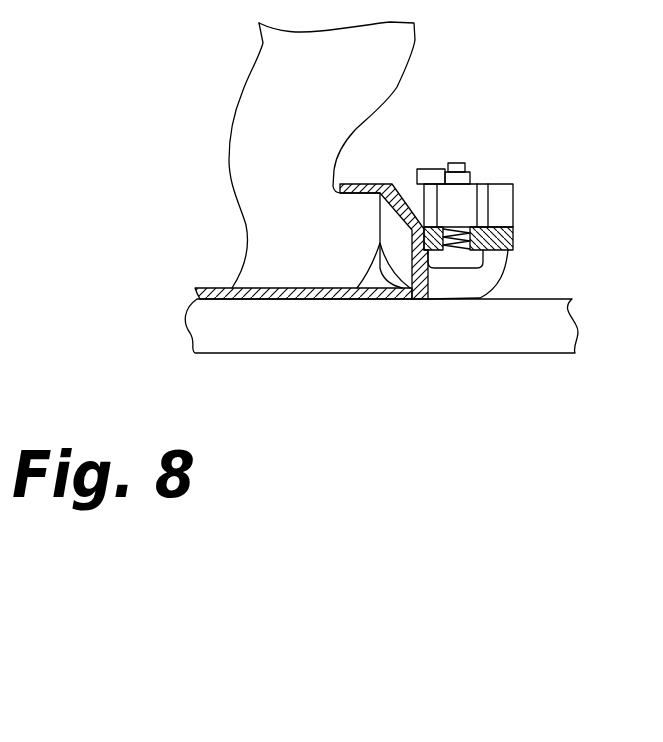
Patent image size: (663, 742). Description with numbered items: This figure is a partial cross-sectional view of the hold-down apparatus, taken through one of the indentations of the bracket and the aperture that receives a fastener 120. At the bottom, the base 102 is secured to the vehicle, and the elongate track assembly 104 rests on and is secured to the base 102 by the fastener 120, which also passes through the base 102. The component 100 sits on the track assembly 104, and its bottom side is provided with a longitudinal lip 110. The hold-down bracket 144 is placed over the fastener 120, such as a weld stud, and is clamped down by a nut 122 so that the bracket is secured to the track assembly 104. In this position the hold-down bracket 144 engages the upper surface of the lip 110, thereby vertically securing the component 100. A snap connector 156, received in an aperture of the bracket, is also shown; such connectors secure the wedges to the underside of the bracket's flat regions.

The component 100 is at (242, 115).
The base 102 is at (258, 342).
The track assembly 104 is at (318, 293).
The second longitudinal lip 110 is at (368, 212).
The fastener 120 is at (462, 165).
The nut 122 is at (482, 210).
The hold-down bracket 144 is at (367, 180).
The snap connector 156 is at (432, 172).